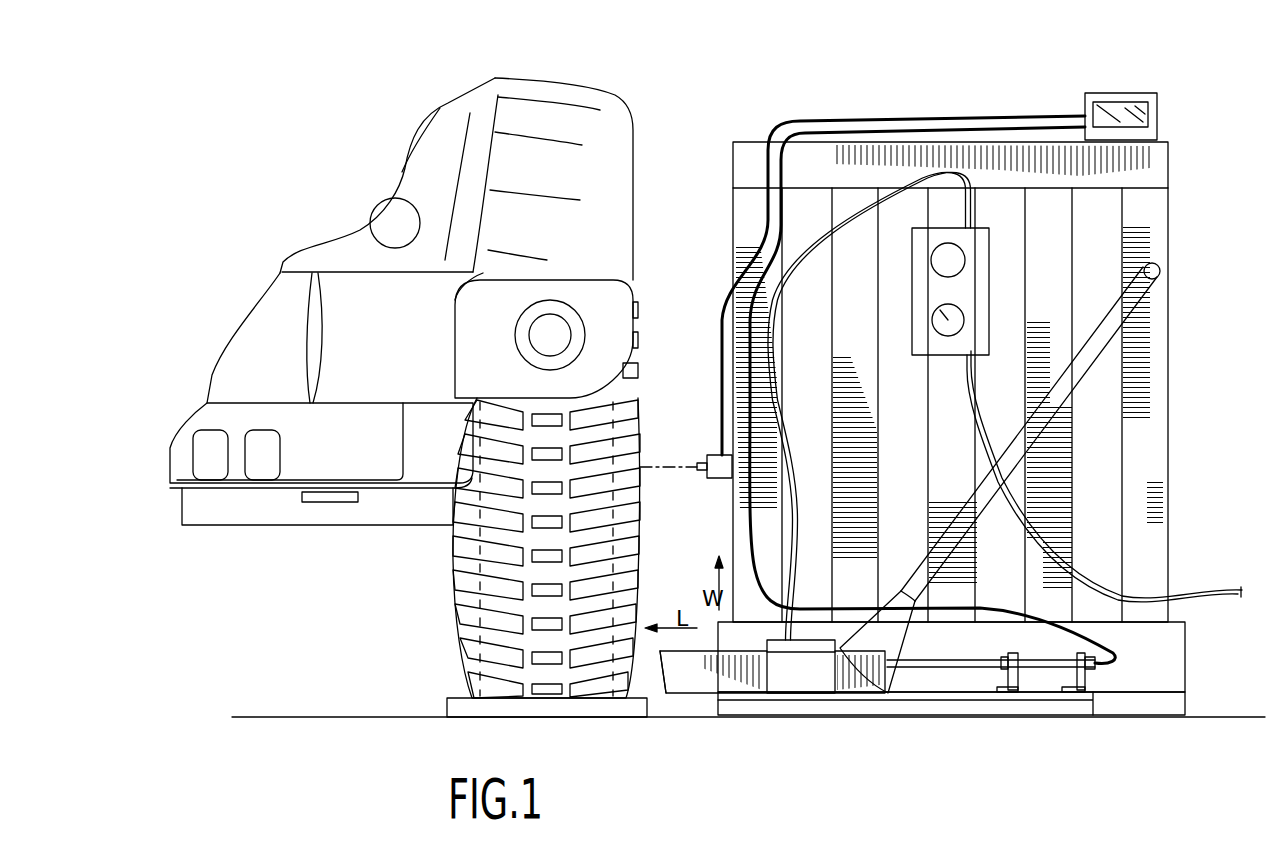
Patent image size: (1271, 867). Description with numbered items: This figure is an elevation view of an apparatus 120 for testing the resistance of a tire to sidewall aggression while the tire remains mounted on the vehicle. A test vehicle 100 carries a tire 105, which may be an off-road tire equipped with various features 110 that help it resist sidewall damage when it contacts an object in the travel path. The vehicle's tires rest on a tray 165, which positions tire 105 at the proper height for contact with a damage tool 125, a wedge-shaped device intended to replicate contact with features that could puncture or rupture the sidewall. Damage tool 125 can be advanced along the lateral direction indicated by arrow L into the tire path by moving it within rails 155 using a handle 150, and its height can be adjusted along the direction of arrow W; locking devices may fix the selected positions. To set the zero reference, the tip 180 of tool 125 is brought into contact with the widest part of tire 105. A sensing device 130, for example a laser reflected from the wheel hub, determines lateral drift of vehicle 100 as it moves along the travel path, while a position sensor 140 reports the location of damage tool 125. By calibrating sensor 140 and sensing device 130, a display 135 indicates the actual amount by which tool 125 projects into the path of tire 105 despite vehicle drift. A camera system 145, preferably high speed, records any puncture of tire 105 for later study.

The test vehicle 100 is at (588, 137).
The tire 105 is at (463, 547).
The features 110 is at (648, 402).
The apparatus 120 is at (913, 456).
The damage tool 125 is at (695, 676).
The sensing device 130 is at (700, 463).
The display 135 is at (1143, 107).
The position sensor 140 is at (1040, 663).
The camera system 145 is at (970, 287).
The handle 150 is at (1127, 307).
The rails 155 is at (803, 676).
The tray 165 is at (437, 698).
The tip 180 is at (656, 678).